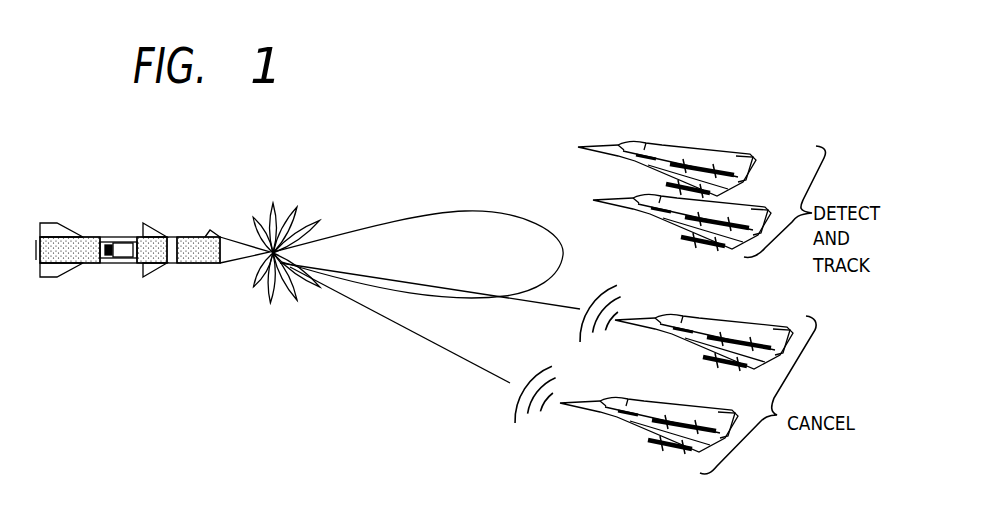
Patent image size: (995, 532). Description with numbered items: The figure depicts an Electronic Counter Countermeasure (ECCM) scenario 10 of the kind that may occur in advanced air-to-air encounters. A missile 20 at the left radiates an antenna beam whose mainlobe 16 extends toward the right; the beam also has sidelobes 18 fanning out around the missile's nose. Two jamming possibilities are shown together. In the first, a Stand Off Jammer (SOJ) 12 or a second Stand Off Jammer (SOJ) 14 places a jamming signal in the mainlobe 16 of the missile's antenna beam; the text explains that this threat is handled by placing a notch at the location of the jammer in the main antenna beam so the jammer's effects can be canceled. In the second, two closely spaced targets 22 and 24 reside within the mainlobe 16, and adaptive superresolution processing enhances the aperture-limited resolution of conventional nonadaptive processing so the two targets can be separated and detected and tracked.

The Electronic Counter Countermeasure (ECCM) scenario 10 is at (553, 132).
The Stand Off Jammer (SOJ) 12 is at (713, 332).
The Stand Off Jammer (SOJ) 14 is at (638, 427).
The mainlobe 16 is at (417, 207).
The sidelobe radiation pattern 18 is at (270, 302).
The missile 20 is at (235, 236).
The target 22 is at (673, 157).
The target 24 is at (640, 213).